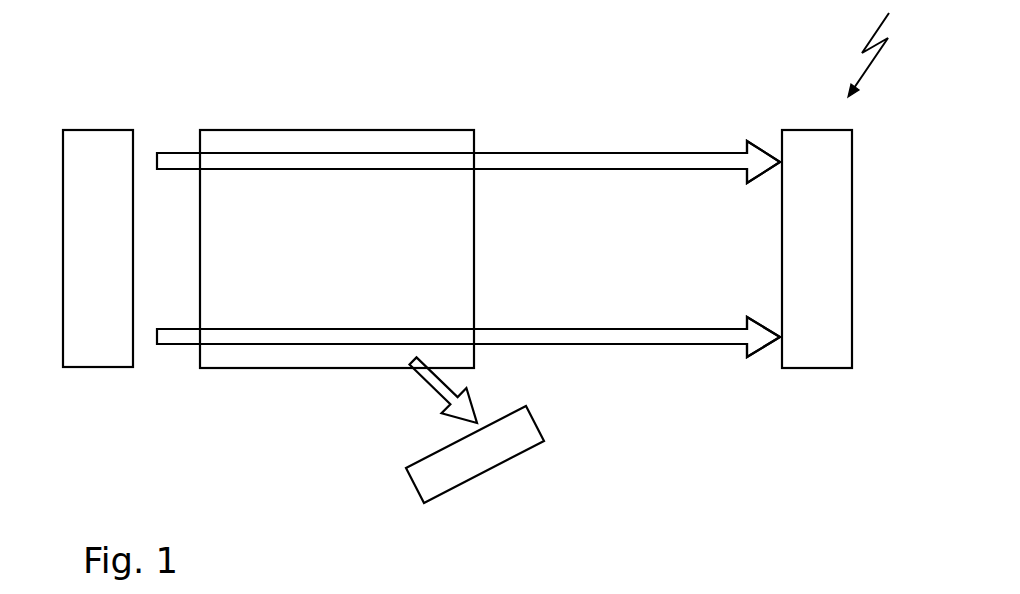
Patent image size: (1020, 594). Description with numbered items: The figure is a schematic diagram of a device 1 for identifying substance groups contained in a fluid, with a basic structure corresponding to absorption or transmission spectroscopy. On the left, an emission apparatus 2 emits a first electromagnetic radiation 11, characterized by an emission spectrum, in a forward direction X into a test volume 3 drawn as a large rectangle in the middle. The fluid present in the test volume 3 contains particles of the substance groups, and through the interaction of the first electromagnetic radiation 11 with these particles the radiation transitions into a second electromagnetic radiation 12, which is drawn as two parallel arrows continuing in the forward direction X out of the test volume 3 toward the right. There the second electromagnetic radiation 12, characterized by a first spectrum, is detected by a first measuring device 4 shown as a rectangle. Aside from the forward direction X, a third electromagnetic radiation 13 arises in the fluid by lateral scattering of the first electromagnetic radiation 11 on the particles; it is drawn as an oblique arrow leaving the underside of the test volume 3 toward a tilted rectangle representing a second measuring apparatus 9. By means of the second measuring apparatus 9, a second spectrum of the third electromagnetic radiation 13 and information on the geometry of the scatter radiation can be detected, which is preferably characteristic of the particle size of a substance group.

The device 1 is at (873, 48).
The emission apparatus 2 is at (100, 142).
The test volume 3 is at (442, 143).
The first measuring device 4 is at (838, 238).
The second measuring apparatus 9 is at (423, 483).
The first electromagnetic radiation 11 is at (180, 158).
The second electromagnetic radiation 12 is at (667, 162).
The third electromagnetic radiation 13 is at (436, 388).
The forward direction X is at (565, 335).